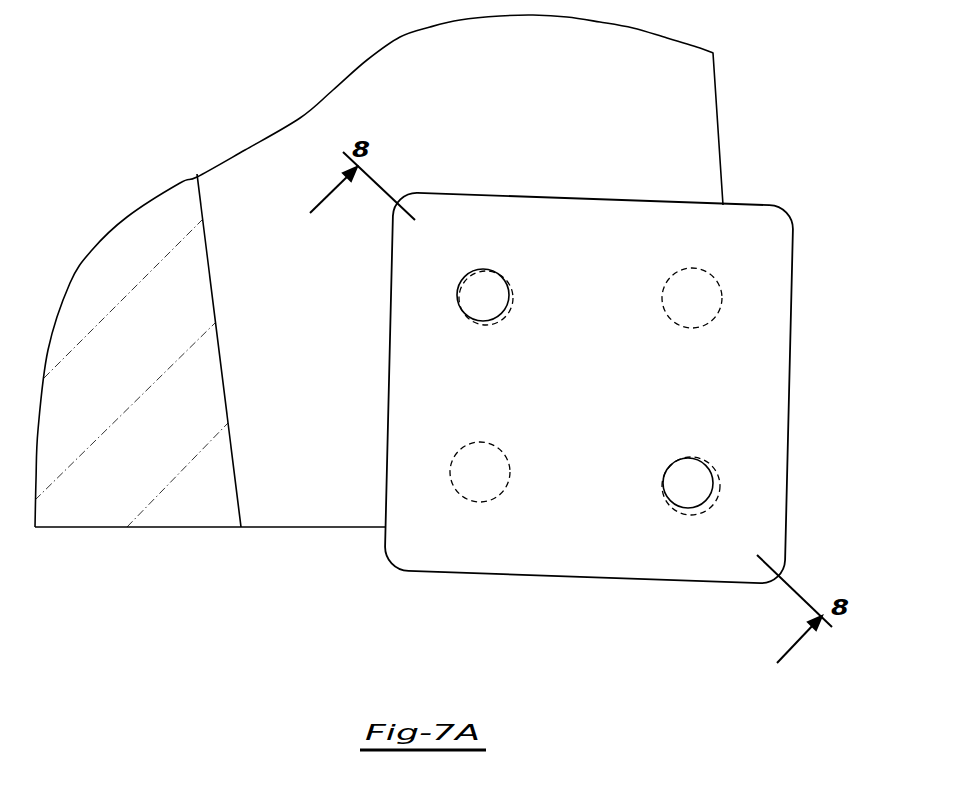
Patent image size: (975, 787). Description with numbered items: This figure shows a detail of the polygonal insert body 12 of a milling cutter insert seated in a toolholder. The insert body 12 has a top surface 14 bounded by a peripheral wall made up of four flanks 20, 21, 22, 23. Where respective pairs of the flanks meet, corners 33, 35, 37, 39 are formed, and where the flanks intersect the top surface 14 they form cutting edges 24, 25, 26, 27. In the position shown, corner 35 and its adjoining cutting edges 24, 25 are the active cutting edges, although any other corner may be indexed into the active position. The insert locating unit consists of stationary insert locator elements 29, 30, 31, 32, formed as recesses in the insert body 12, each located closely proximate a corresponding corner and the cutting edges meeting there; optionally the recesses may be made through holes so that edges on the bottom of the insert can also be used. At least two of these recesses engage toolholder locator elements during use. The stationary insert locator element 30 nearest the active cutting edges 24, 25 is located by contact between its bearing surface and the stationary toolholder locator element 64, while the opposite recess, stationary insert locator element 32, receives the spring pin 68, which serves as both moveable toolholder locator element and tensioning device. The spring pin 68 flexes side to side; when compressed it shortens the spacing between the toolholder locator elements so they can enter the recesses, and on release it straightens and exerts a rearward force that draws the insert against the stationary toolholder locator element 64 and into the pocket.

The insert body 12 is at (790, 392).
The top surface 14 is at (590, 410).
The flank 20 is at (600, 198).
The flank 21 is at (795, 295).
The flank 22 is at (477, 575).
The flank 23 is at (387, 468).
The cutting edge 24 is at (787, 490).
The cutting edge 25 is at (588, 578).
The cutting edge 26 is at (389, 365).
The cutting edge 27 is at (494, 196).
The stationary insert locator element 29 is at (713, 275).
The stationary insert locator element 30 is at (683, 510).
The stationary insert locator element 31 is at (462, 497).
The stationary insert locator element 32 is at (457, 295).
The corner 33 is at (787, 212).
The corner 35 is at (773, 582).
The corner 37 is at (392, 562).
The corner 39 is at (415, 193).
The stationary toolholder locator element 64 is at (695, 478).
The spring pin 68 is at (487, 280).